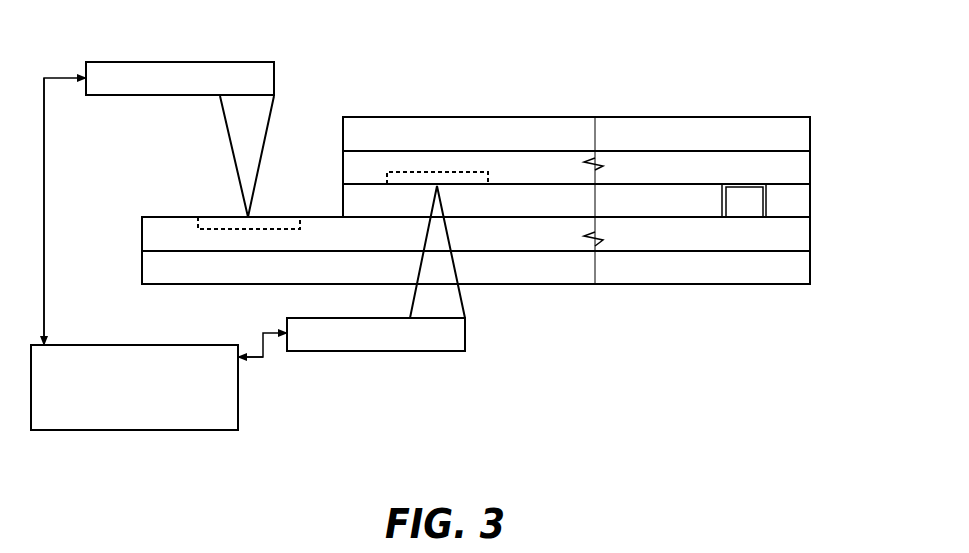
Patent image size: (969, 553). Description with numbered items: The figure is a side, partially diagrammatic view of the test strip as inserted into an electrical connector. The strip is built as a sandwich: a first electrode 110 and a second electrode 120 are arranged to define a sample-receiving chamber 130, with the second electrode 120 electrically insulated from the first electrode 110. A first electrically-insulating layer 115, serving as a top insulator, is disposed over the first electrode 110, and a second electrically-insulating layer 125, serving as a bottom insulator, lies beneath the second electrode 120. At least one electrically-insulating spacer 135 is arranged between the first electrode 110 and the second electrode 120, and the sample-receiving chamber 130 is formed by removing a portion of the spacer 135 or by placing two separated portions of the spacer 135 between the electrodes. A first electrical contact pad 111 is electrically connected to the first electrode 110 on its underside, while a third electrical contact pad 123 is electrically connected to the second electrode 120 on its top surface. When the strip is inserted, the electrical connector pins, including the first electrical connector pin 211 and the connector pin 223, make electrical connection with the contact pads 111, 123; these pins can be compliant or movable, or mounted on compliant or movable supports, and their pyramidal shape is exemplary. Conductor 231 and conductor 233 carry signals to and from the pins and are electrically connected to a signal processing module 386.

The first electrode 110 is at (811, 168).
The first electrical contact pad 111 is at (437, 172).
The first electrically-insulating layer 115 is at (811, 134).
The second electrode 120 is at (811, 234).
The third electrical contact pad 123 is at (198, 223).
The second electrically-insulating layer 125 is at (811, 268).
The sample-receiving chamber 130 is at (745, 187).
The electrically-insulating spacer 135 is at (811, 200).
The first electrical connector pin 211 is at (465, 303).
The electrical connector pin 223 is at (231, 157).
The conductor 231 is at (375, 352).
The conductor 233 is at (180, 60).
The signal processing module 386 is at (238, 418).